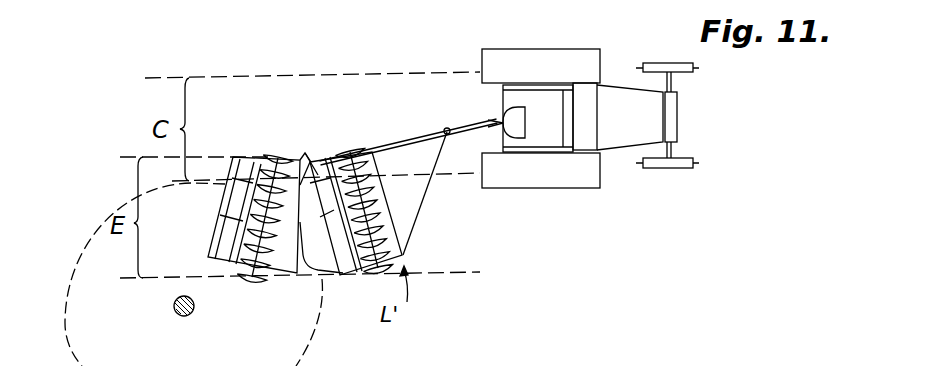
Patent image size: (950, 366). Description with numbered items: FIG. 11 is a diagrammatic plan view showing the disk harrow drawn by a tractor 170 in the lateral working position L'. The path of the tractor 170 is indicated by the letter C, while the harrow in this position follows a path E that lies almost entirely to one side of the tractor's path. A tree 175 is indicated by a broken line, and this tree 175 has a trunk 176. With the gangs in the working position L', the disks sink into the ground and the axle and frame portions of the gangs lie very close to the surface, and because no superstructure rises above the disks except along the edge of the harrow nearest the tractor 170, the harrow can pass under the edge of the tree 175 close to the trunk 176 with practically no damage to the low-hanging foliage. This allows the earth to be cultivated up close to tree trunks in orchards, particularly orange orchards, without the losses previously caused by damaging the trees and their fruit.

The tractor 170 is at (585, 175).
The tree 175 is at (298, 350).
The trunk 176 is at (195, 311).